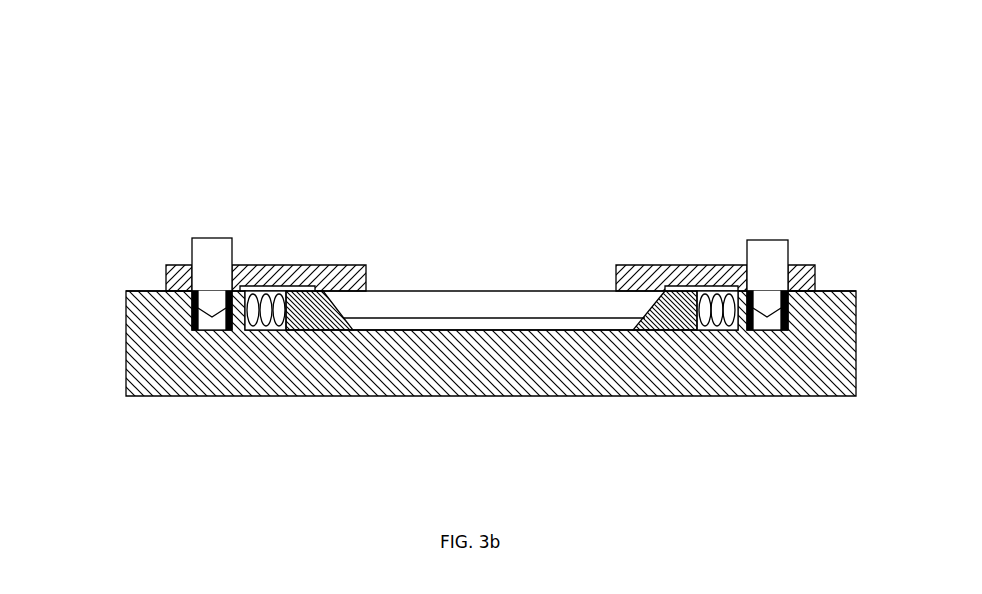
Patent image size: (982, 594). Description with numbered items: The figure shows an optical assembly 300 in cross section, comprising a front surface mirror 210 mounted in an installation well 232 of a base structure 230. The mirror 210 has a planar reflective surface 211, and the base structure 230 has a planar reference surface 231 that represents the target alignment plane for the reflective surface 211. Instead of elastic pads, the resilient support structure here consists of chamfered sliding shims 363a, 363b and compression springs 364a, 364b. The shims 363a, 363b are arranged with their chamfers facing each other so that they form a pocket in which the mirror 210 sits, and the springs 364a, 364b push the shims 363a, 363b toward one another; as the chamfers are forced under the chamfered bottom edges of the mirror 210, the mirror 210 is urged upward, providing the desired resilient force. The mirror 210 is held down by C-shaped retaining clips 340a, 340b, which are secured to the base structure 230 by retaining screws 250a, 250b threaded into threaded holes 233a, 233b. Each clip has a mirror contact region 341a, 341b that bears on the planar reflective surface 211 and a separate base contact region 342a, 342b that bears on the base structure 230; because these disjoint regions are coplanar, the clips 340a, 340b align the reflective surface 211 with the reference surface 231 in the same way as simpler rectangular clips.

The optical assembly 300 is at (146, 76).
The front surface mirror 210 is at (490, 228).
The planar reflective surface 211 is at (432, 290).
The base structure 230 is at (428, 377).
The planar reference surface 231 is at (140, 292).
The installation well 232 is at (563, 332).
The threaded hole 233a is at (206, 330).
The threaded hole 233b is at (775, 332).
The retaining screw 250a is at (208, 238).
The retaining screw 250b is at (767, 240).
The C-shaped retaining clip 340a is at (258, 305).
The C-shaped retaining clip 340b is at (735, 285).
The mirror contact region 341a is at (335, 288).
The mirror contact region 341b is at (647, 287).
The base contact region 342a is at (173, 268).
The base contact region 342b is at (804, 268).
The chamfered sliding shim 363a is at (324, 330).
The chamfered sliding shim 363b is at (657, 330).
The compression spring 364a is at (272, 330).
The compression spring 364b is at (720, 330).